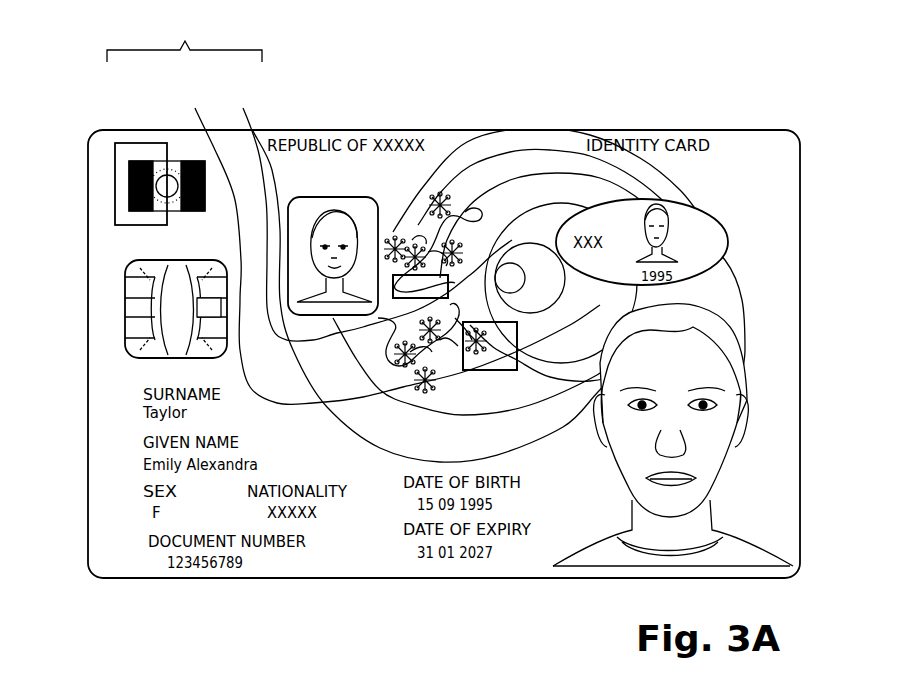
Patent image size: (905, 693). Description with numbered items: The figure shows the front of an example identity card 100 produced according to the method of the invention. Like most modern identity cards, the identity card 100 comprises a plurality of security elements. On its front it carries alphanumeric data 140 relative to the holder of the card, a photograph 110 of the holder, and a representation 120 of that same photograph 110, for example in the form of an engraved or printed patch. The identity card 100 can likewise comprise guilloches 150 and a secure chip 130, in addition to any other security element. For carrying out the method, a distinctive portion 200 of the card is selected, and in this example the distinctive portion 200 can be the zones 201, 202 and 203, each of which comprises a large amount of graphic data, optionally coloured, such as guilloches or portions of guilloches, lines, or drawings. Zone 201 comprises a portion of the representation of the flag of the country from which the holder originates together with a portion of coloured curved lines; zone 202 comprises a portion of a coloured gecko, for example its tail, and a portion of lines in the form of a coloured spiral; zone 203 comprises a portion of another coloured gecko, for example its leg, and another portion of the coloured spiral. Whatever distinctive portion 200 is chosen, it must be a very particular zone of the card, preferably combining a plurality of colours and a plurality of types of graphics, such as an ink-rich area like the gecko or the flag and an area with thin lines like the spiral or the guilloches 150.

The identity card 100 is at (518, 120).
The photograph 110 is at (748, 372).
The representation of the photograph 120 is at (345, 197).
The secure chip 130 is at (125, 308).
The alphanumeric data 140 is at (450, 578).
The guilloches 150 is at (375, 456).
The distinctive portion 200 is at (184, 37).
The zone 201 is at (141, 143).
The zone 202 is at (298, 199).
The zone 203 is at (167, 147).